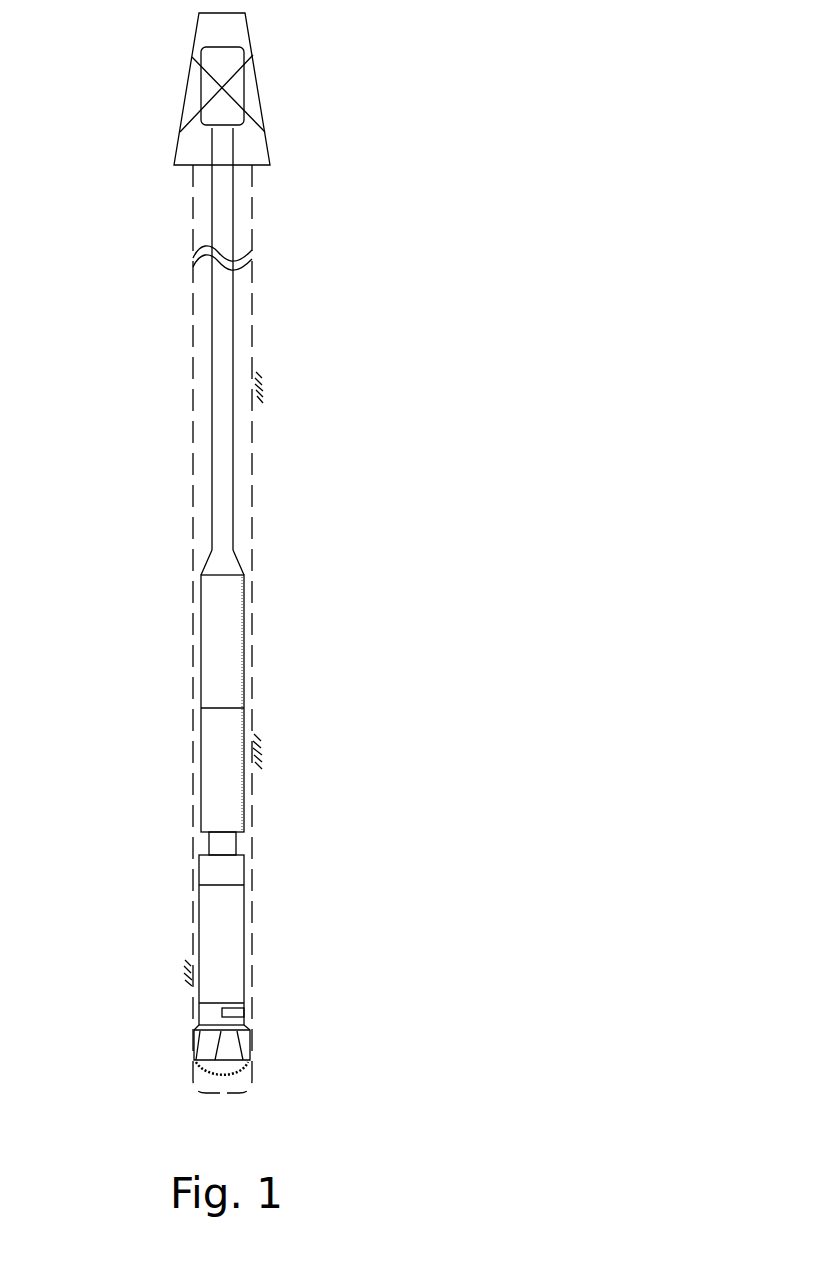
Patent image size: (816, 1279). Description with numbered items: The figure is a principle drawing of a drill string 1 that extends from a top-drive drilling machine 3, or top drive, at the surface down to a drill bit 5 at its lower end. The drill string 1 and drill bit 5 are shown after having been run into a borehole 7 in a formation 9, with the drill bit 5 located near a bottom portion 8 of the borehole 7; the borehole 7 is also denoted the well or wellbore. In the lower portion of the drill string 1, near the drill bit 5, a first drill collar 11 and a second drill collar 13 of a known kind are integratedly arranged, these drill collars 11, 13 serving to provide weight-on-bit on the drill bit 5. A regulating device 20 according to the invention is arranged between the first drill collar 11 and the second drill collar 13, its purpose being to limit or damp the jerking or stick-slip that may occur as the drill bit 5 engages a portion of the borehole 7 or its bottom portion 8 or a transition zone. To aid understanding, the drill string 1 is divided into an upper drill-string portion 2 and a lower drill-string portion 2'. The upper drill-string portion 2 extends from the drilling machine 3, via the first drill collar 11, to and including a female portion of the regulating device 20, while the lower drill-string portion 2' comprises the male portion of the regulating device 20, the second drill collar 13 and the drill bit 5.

The drill string 1 is at (203, 440).
The upper drill-string portion 2 is at (144, 584).
The lower drill-string portion 2' is at (144, 885).
The top-drive drilling machine 3 is at (245, 85).
The drill bit 5 is at (193, 1047).
The borehole 7 is at (240, 297).
The bottom portion 8 is at (232, 1095).
The formation 9 is at (298, 403).
The first drill collar 11 is at (244, 662).
The second drill collar 13 is at (244, 959).
The regulating device 20 is at (188, 793).